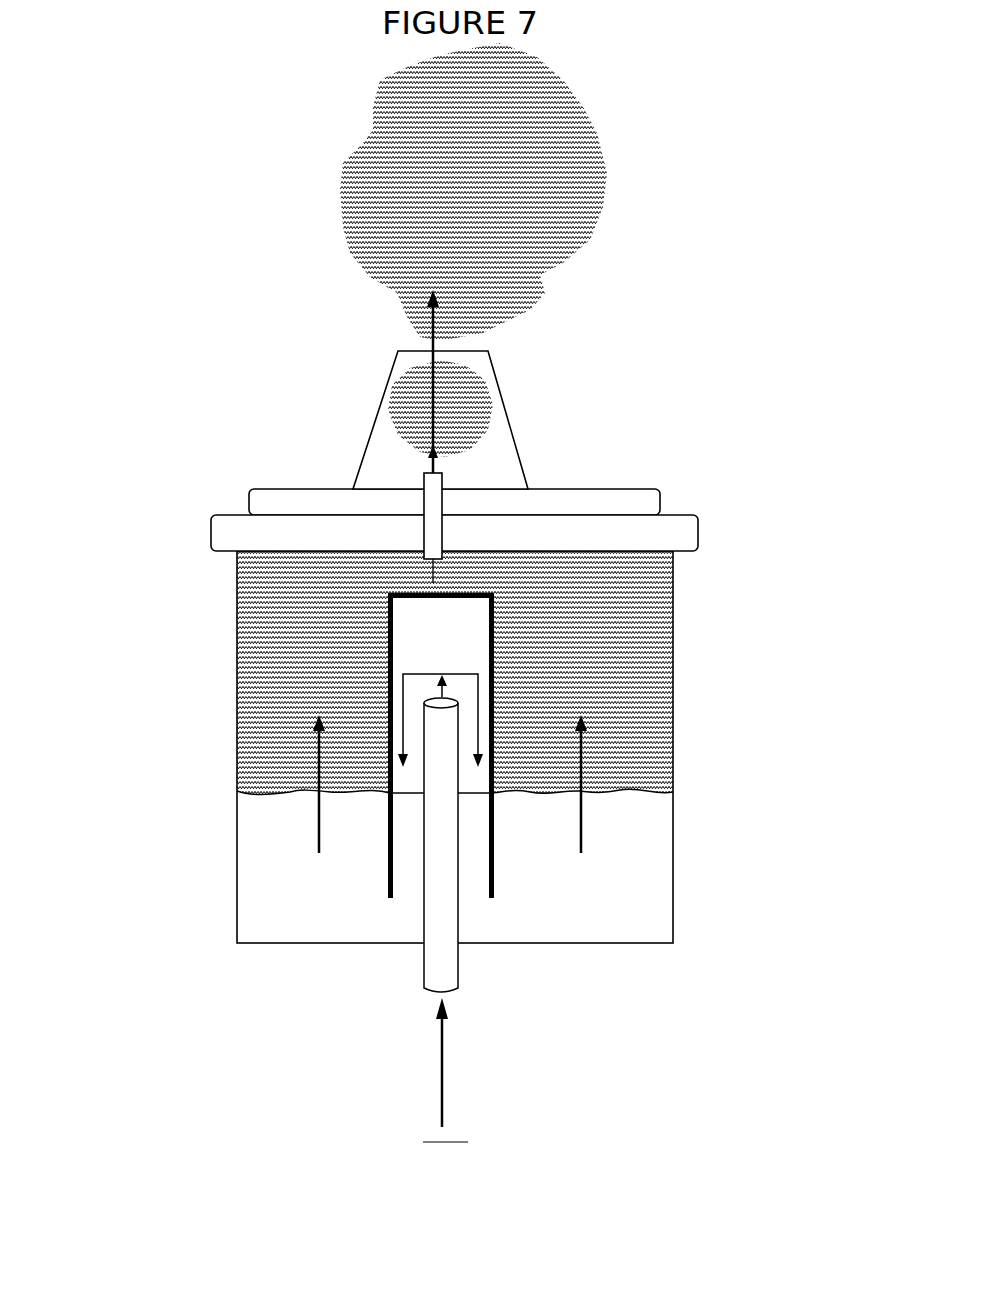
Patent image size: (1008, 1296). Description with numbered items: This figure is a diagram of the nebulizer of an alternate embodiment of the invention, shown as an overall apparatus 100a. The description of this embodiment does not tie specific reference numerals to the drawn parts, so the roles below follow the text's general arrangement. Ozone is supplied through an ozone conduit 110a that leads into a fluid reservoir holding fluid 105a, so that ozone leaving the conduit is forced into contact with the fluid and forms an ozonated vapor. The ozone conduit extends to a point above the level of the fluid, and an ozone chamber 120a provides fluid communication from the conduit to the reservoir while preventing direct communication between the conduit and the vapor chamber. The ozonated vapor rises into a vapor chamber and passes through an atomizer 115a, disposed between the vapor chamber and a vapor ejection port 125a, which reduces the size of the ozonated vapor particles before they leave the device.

The ozone treatment apparatus 100a is at (492, 815).
The liquid solution 105a is at (698, 786).
The ozone inlet tube 110a is at (433, 912).
The valve 115a is at (433, 540).
The foam layer 120a is at (337, 655).
The outlet funnel 125a is at (390, 376).